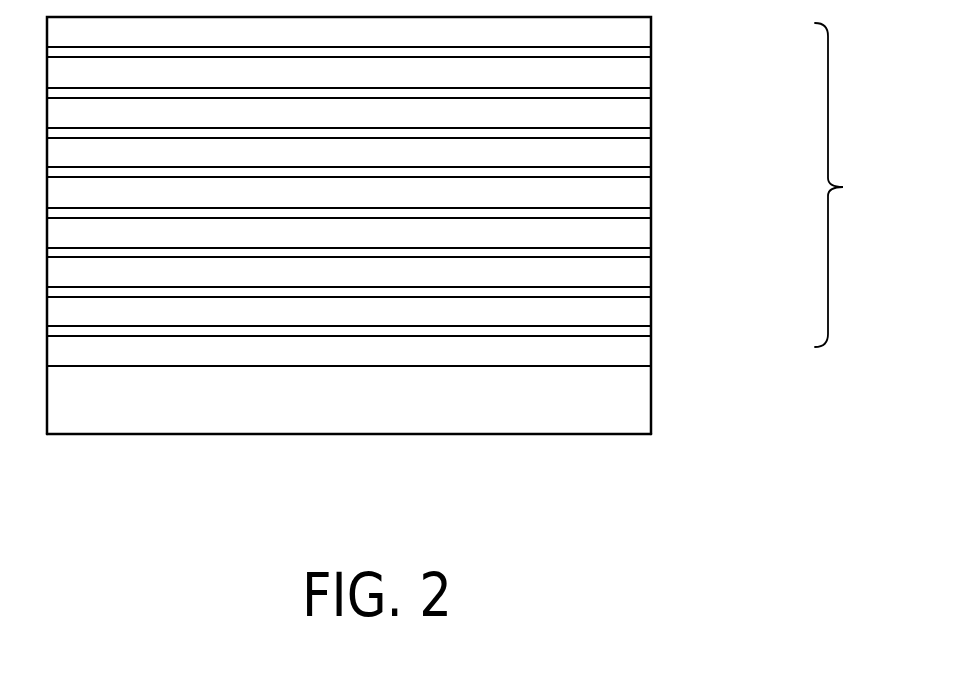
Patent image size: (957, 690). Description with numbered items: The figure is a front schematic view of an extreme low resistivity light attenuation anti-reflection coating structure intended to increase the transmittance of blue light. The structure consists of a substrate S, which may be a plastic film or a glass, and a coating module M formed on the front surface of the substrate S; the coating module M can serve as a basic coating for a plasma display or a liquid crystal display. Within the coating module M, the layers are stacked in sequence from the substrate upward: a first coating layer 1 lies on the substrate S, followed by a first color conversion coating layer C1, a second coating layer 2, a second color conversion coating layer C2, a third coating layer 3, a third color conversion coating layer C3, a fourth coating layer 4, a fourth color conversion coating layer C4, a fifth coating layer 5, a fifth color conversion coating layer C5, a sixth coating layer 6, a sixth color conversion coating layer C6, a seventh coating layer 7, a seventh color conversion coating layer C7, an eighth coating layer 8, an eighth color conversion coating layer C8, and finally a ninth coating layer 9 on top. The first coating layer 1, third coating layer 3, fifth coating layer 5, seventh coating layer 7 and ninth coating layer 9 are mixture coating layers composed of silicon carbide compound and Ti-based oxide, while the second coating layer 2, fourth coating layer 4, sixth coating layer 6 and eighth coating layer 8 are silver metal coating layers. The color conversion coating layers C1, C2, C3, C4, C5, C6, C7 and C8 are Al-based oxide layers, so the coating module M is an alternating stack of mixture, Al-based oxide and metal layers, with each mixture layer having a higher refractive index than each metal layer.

The substrate S is at (634, 413).
The first coating layer 1 is at (634, 363).
The second coating layer 2 is at (634, 314).
The third coating layer 3 is at (634, 274).
The fourth coating layer 4 is at (634, 234).
The fifth coating layer 5 is at (634, 196).
The sixth coating layer 6 is at (634, 158).
The seventh coating layer 7 is at (634, 118).
The eighth coating layer 8 is at (634, 78).
The ninth coating layer 9 is at (634, 34).
The first color conversion coating layer C1 is at (635, 335).
The second color conversion coating layer C2 is at (635, 297).
The third color conversion coating layer C3 is at (635, 257).
The fourth color conversion coating layer C4 is at (635, 215).
The fifth color conversion coating layer C5 is at (635, 175).
The sixth color conversion coating layer C6 is at (635, 135).
The seventh color conversion coating layer C7 is at (635, 97).
The eighth color conversion coating layer C8 is at (635, 55).
The coating module M is at (844, 185).